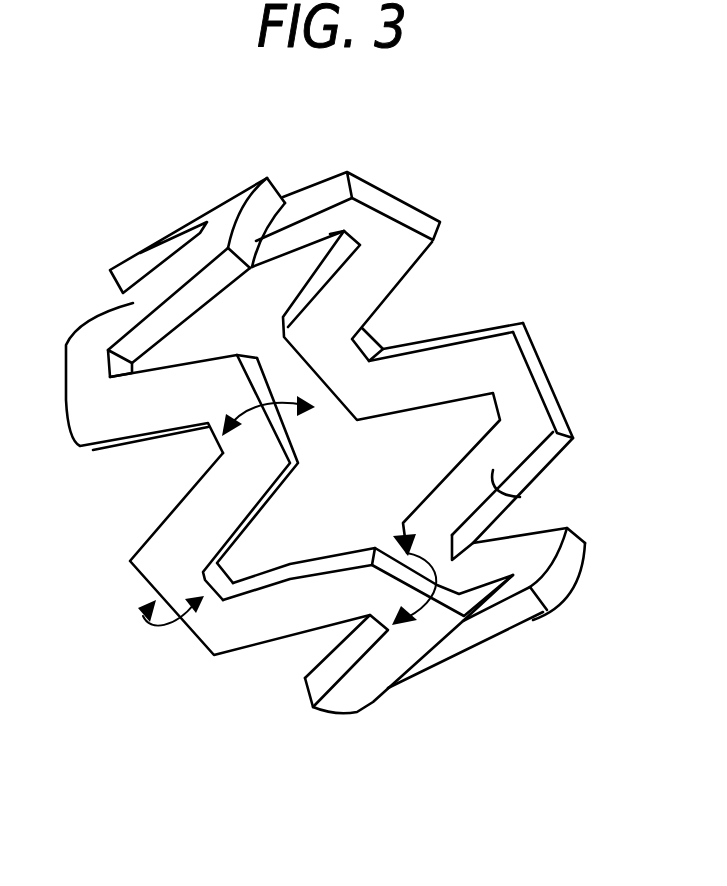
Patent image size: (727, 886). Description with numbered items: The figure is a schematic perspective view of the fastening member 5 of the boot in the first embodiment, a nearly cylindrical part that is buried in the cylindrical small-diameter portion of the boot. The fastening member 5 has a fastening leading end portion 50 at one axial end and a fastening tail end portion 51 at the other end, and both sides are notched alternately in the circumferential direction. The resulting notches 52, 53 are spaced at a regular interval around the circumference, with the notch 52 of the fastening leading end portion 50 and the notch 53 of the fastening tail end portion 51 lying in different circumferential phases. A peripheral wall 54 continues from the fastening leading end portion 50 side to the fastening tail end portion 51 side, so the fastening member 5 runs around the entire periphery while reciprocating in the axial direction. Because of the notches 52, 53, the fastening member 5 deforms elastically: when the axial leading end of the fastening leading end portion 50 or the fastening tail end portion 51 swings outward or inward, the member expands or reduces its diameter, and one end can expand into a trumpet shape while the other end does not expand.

The fastening member 5 is at (298, 190).
The fastening leading end portion 50 is at (557, 375).
The fastening tail end portion 51 is at (140, 577).
The notch 52 is at (432, 310).
The notch 53 is at (288, 270).
The peripheral wall 54 is at (535, 497).